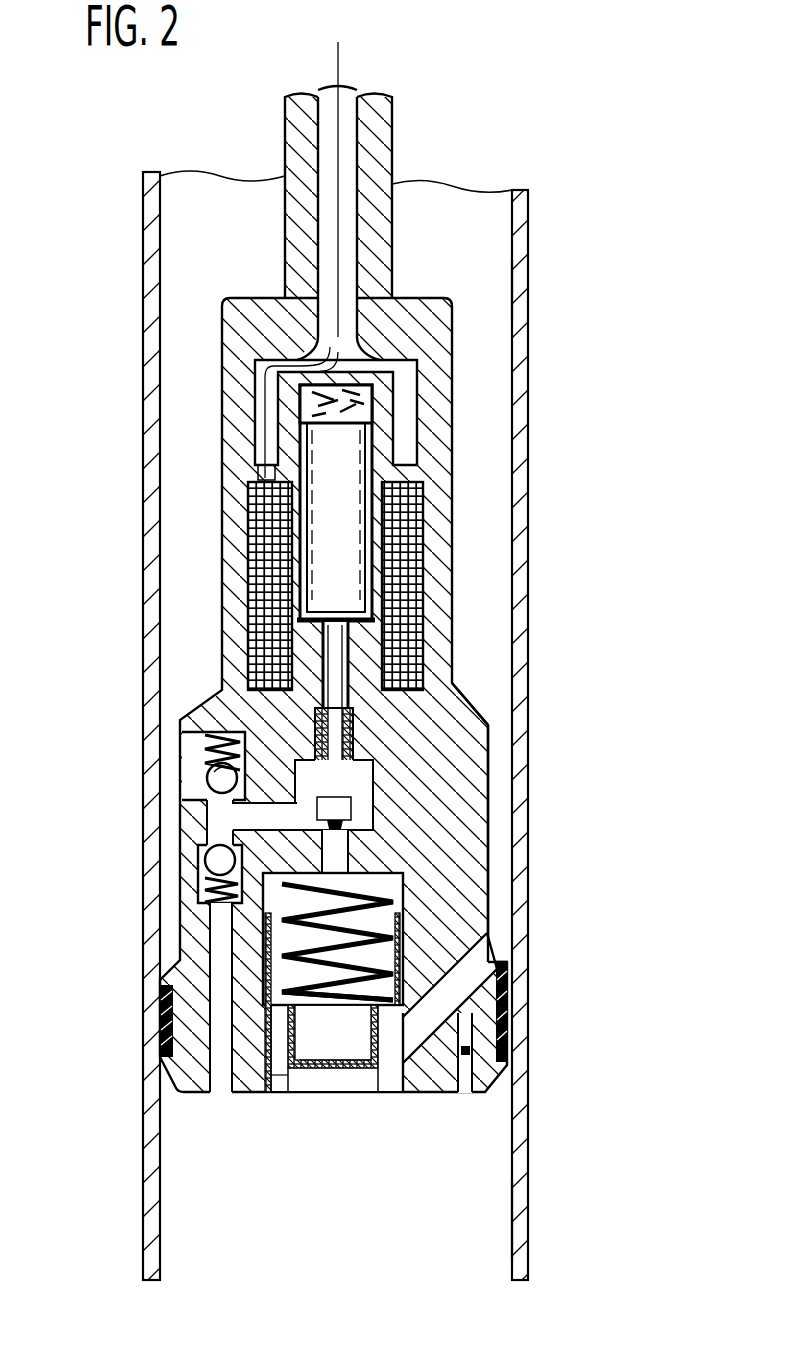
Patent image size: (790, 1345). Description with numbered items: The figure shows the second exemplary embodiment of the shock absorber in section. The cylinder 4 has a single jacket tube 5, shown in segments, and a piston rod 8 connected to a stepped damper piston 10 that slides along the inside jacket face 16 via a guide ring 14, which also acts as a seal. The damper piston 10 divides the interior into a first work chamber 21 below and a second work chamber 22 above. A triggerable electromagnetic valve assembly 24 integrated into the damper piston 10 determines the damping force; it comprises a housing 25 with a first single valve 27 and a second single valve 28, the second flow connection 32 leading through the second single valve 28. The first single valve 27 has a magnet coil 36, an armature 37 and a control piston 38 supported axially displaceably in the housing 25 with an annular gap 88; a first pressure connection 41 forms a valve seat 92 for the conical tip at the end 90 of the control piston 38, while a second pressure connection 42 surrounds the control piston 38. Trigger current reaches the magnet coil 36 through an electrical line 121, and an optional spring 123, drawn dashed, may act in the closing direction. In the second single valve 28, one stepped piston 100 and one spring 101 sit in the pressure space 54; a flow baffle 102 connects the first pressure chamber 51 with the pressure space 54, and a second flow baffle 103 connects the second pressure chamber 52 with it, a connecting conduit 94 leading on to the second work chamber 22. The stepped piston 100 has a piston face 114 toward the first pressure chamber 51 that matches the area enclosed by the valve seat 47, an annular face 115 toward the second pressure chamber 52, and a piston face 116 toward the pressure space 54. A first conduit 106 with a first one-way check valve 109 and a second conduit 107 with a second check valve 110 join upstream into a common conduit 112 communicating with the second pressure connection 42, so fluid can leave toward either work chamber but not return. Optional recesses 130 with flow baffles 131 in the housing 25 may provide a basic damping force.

The cylinder 4 is at (125, 228).
The jacket tube 5 is at (150, 292).
The piston rod 8 is at (380, 132).
The damper piston 10 is at (458, 661).
The guide ring 14 is at (165, 1020).
The inside jacket face 16 is at (500, 282).
The first work chamber 21 is at (488, 1222).
The second work chamber 22 is at (475, 233).
The valve assembly 24 is at (380, 797).
The housing 25 is at (462, 713).
The first single valve 27 is at (210, 550).
The second single valve 28 is at (258, 940).
The second flow connection 32 is at (505, 985).
The magnet coil 36 is at (410, 528).
The armature 37 is at (336, 502).
The control piston 38 is at (355, 755).
The first pressure connection 41 is at (322, 858).
The second pressure connection 42 is at (305, 762).
The valve seat 47 is at (283, 1075).
The first pressure chamber 51 is at (307, 1078).
The second pressure chamber 52 is at (405, 1073).
The pressure space 54 is at (395, 893).
The annular gap 88 is at (400, 712).
The end 90 is at (345, 855).
The valve seat 92 is at (412, 825).
The connecting conduit 94 is at (440, 1075).
The stepped piston 100 is at (460, 935).
The spring 101 is at (350, 905).
The flow baffle 102 is at (338, 1075).
The second flow baffle 103 is at (395, 1073).
The first conduit 106 is at (220, 1082).
The second conduit 107 is at (182, 748).
The first one-way check valve 109 is at (207, 857).
The second check valve 110 is at (210, 780).
The common conduit 112 is at (240, 817).
The piston face 114 is at (323, 1068).
The annular face 115 is at (248, 1078).
The piston face 116 is at (333, 1036).
The electrical line 121 is at (342, 46).
The spring 123 is at (330, 403).
The recesses 130 is at (508, 1040).
The flow baffles 131 is at (473, 1052).